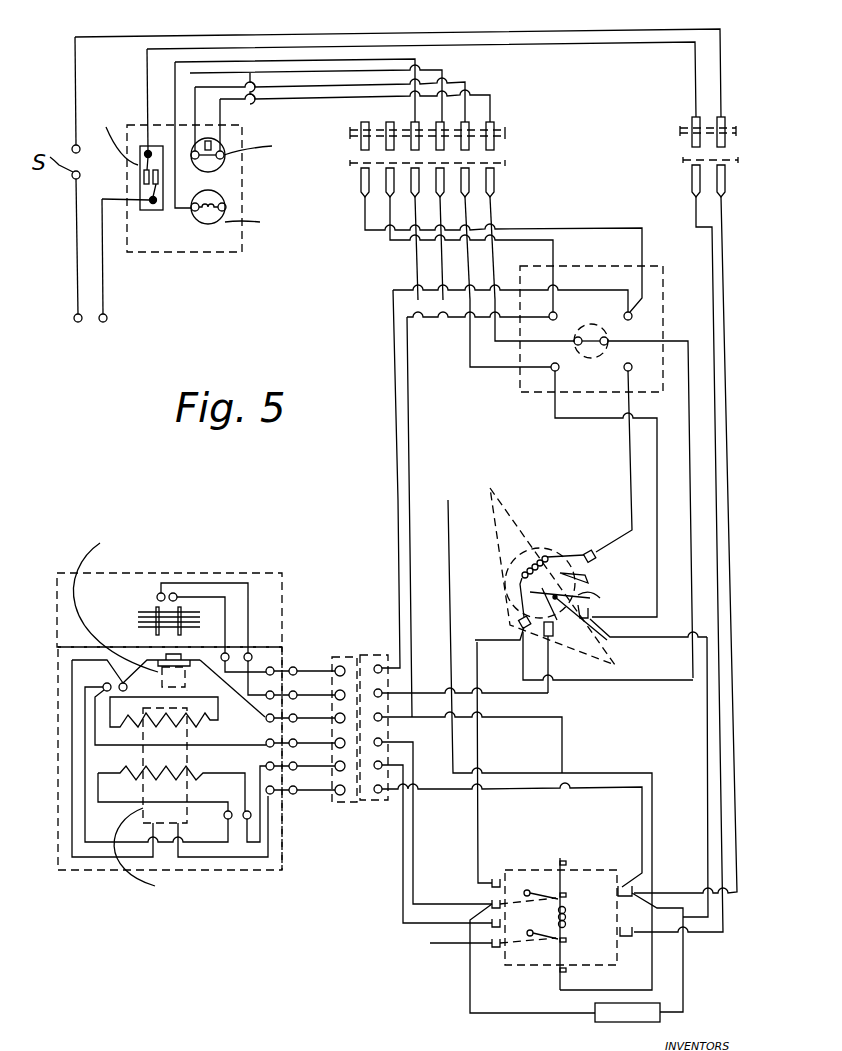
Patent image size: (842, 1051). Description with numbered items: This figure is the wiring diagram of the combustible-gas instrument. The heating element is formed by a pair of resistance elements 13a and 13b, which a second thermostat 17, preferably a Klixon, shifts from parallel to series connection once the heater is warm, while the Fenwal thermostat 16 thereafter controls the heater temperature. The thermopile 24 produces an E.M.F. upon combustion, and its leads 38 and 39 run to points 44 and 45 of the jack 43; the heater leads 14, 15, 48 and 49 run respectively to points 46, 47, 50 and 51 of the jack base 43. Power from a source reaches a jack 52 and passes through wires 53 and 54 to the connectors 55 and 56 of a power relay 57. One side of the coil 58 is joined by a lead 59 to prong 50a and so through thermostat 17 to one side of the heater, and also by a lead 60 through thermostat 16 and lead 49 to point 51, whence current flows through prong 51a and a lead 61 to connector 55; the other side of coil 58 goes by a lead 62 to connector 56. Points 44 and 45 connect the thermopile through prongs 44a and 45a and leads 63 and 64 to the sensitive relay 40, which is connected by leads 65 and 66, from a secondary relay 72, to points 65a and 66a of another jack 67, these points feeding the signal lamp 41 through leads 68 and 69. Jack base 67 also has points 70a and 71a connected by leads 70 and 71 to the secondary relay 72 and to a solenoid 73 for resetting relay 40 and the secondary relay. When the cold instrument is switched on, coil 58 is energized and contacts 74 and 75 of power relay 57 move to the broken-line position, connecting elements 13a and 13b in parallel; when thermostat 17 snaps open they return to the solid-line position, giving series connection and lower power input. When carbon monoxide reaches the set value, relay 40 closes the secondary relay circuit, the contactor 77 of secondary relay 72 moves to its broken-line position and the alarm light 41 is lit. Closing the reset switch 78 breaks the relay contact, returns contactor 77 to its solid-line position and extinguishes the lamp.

The resistance element 13a is at (163, 712).
The resistance element 13b is at (171, 788).
The heater lead 14 is at (263, 770).
The heater lead 15 is at (222, 746).
The thermostat 16 is at (188, 815).
The second thermostat 17 is at (186, 680).
The thermopile 24 is at (146, 612).
The lead 38 is at (250, 606).
The lead 39 is at (208, 598).
The sensitive relay 40 is at (650, 296).
The signal lamp 41 is at (208, 226).
The jack 43 is at (340, 801).
The point of jack 44 is at (337, 668).
The prong of jack 44a is at (372, 662).
The point of jack 45 is at (337, 692).
The prong of jack 45a is at (381, 692).
The point of jack base 46 is at (337, 763).
The point of jack base 47 is at (337, 740).
The heater lead 48 is at (242, 705).
The heater lead 49 is at (276, 822).
The point of jack base 50 is at (337, 715).
The prong of jack 50a is at (386, 714).
The point of jack base 51 is at (337, 787).
The prong of jack 51a is at (378, 795).
The jack 52 is at (683, 160).
The wire 53 is at (727, 277).
The wire 54 is at (710, 254).
The connector 55 is at (622, 884).
The connector 56 is at (627, 937).
The power relay 57 is at (593, 868).
The coil 58 is at (570, 917).
The lead 59 is at (563, 747).
The lead 60 is at (72, 760).
The lead 61 is at (437, 796).
The lead 62 is at (607, 991).
The lead 63 is at (396, 506).
The lead 64 is at (408, 548).
The lead 65 is at (416, 262).
The point of jack base 65a is at (412, 192).
The lead 66 is at (440, 283).
The point of jack base 66a is at (437, 192).
The jack 67 is at (505, 163).
The lead 68 is at (200, 64).
The lead 69 is at (252, 192).
The lead 70 is at (478, 372).
The point of jack base 70a is at (462, 192).
The lead 71 is at (518, 345).
The point of jack base 71a is at (487, 192).
The secondary relay 72 is at (503, 488).
The solenoid 73 is at (610, 337).
The contact of power relay 74 is at (524, 893).
The contact of power relay 75 is at (527, 936).
The contactor 77 is at (598, 596).
The reset switch 78 is at (224, 151).